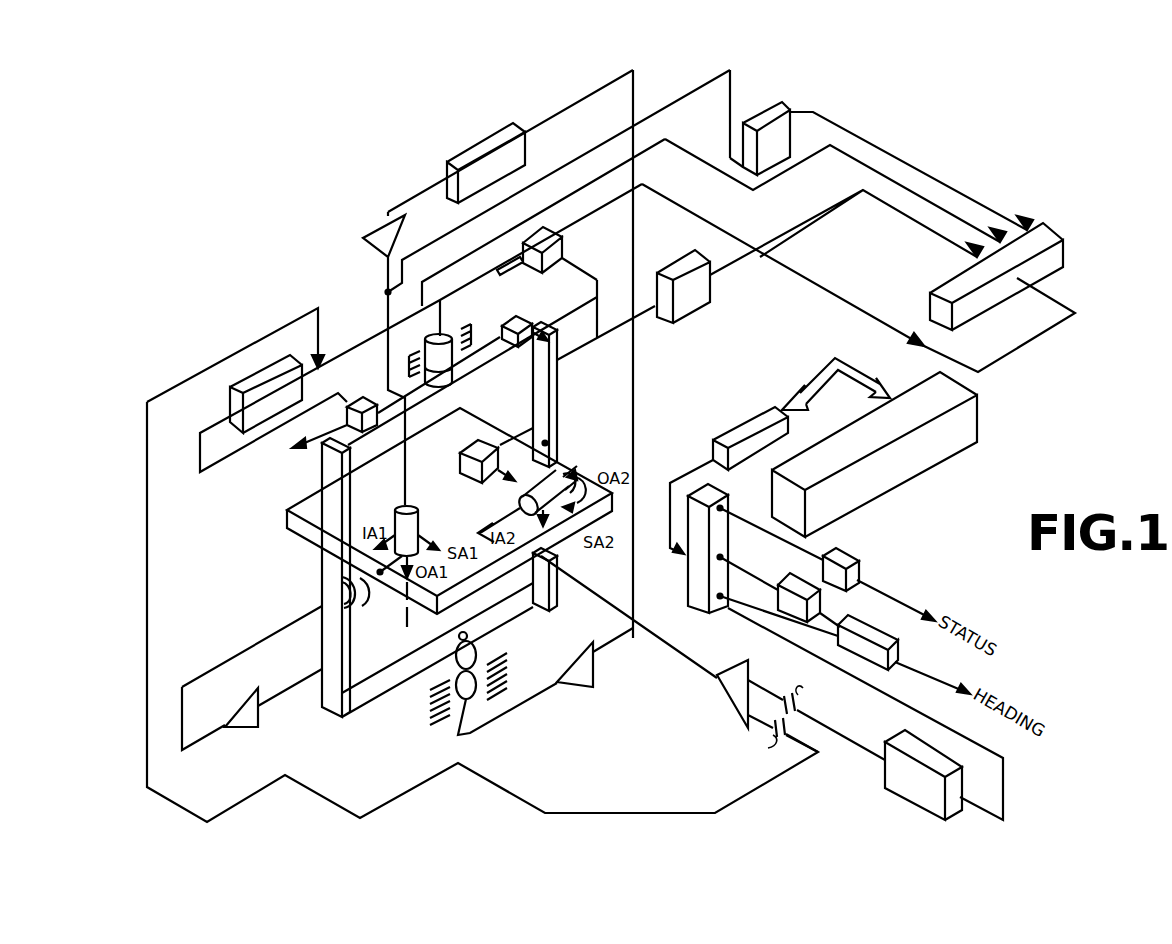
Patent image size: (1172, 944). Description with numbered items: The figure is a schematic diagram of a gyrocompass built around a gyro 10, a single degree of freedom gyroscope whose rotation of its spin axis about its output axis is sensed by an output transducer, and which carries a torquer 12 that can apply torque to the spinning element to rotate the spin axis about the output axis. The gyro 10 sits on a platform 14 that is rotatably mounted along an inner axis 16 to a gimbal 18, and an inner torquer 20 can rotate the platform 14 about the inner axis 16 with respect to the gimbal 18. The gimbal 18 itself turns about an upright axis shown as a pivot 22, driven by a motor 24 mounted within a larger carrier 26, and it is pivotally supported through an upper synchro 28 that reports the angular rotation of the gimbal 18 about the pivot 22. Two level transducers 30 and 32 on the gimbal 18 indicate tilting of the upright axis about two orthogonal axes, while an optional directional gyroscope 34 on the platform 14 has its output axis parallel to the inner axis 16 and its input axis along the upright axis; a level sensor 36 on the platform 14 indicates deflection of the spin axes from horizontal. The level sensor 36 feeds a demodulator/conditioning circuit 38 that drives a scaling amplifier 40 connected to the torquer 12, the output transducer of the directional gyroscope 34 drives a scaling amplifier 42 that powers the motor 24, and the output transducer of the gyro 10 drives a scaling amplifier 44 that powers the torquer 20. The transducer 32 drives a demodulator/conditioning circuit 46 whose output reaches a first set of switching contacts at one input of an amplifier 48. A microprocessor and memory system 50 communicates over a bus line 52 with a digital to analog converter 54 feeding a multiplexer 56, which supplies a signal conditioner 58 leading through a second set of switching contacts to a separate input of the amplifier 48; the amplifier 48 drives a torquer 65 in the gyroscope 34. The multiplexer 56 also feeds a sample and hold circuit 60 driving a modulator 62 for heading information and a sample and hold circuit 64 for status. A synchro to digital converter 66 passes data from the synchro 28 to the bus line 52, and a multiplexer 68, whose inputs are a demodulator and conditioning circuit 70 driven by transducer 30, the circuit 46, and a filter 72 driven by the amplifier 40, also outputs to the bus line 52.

The gyro 10 is at (398, 512).
The torquer 12 is at (408, 510).
The platform 14 is at (287, 517).
The inner axis 16 is at (378, 575).
The gimbal 18 is at (322, 583).
The torquer 20 is at (347, 612).
The pivot 22 is at (459, 634).
The motor 24 is at (458, 734).
The carrier 26 is at (428, 710).
The upper synchro 28 is at (432, 337).
The level transducer 30 is at (525, 296).
The level transducer 32 is at (363, 397).
The directional gyroscope 34 is at (575, 456).
The level sensor 36 is at (460, 456).
The demodulator/conditioning circuit 38 is at (486, 141).
The scaling amplifier 40 is at (366, 242).
The scaling amplifier 42 is at (578, 650).
The scaling amplifier 44 is at (243, 731).
The demodulator/conditioning circuit 46 is at (228, 398).
The amplifier 48 is at (722, 706).
The microprocessor and memory system 50 is at (977, 412).
The bus line 52 is at (818, 382).
The digital to analog converter 54 is at (740, 436).
The multiplexer 56 is at (704, 618).
The signal conditioner circuit 58 is at (910, 803).
The sample and hold circuit 60 is at (790, 580).
The modulator 62 is at (880, 672).
The sample and hold circuit 64 is at (852, 560).
The torquer 65 is at (522, 498).
The synchro to digital converter 66 is at (566, 255).
The multiplexer 68 is at (1063, 255).
The demodulator and conditioning circuit 70 is at (682, 265).
The filter 72 is at (790, 111).